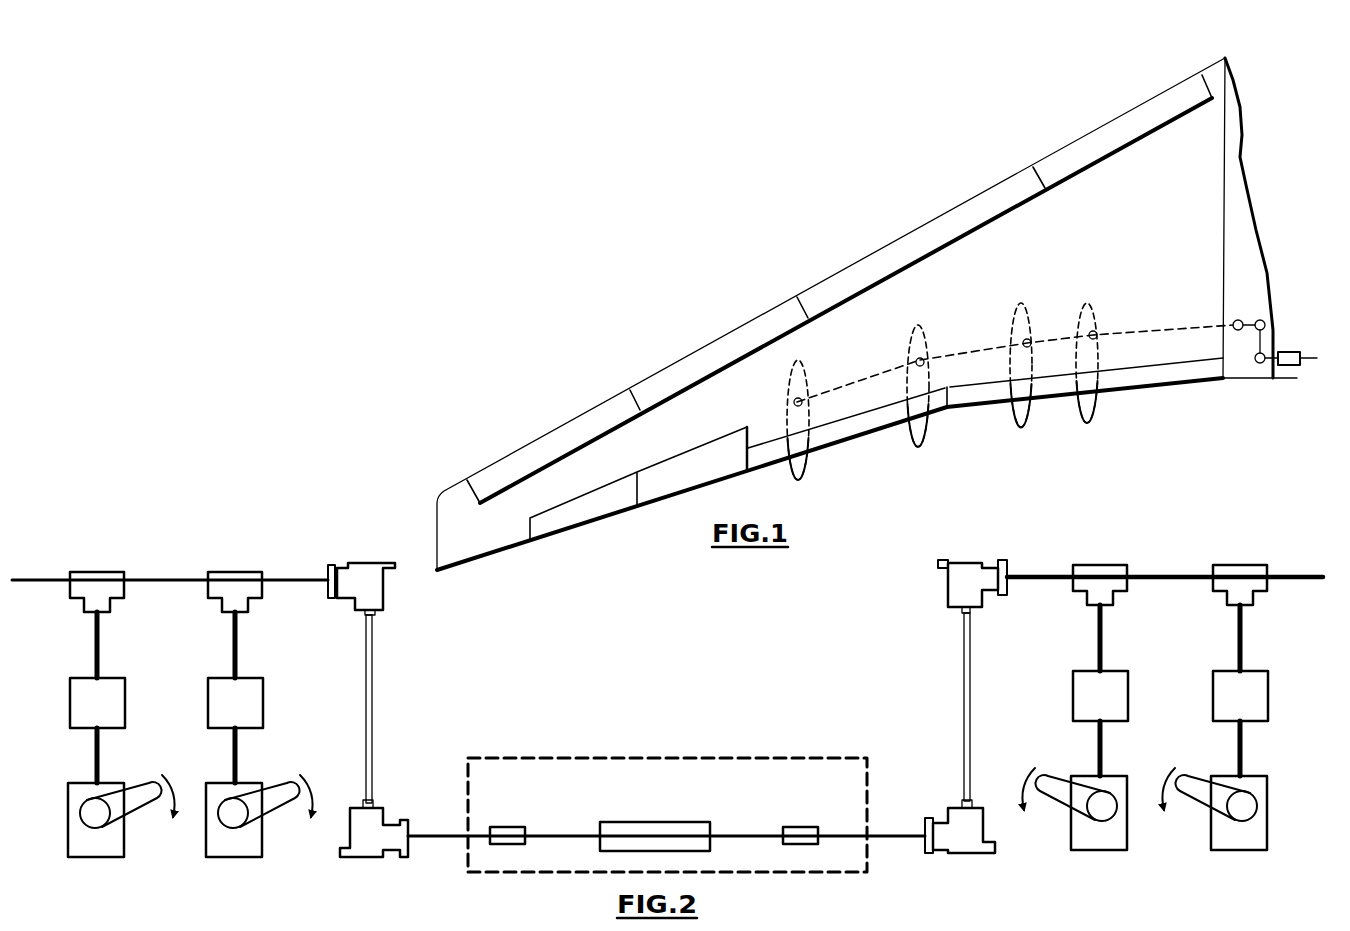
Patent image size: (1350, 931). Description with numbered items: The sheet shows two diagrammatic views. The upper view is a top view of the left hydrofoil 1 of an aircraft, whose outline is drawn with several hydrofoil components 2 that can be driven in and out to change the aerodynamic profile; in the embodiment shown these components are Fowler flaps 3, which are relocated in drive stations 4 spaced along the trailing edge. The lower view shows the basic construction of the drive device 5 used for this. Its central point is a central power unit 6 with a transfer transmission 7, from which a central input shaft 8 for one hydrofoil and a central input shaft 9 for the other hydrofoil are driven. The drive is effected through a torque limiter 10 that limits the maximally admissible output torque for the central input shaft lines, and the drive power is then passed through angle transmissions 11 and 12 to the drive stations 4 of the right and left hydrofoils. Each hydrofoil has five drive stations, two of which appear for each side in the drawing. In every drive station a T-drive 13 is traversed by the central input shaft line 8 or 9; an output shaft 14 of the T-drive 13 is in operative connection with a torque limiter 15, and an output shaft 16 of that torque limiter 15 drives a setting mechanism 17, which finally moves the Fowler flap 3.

In FIG. 1, the hydrofoil 1 is at (1127, 162).
In FIG. 1, the hydrofoil components 2 is at (970, 403).
In FIG. 1, the Fowler flaps 3 is at (868, 423).
In FIG. 1, the drive stations 4 is at (812, 352).
In FIG. 2, the drive stations 4 is at (664, 670).
In FIG. 2, the drive device 5 is at (666, 783).
In FIG. 2, the central power unit 6 is at (802, 758).
In FIG. 2, the transfer transmission 7 is at (638, 830).
In FIG. 1, the central input shaft 8 is at (978, 335).
In FIG. 2, the central input shaft 8 is at (372, 680).
In FIG. 2, the central input shaft 9 is at (965, 632).
In FIG. 1, the torque limiter 10 is at (1293, 348).
In FIG. 2, the torque limiter 10 is at (503, 827).
In FIG. 1, the angle transmission 11 is at (1258, 366).
In FIG. 2, the angle transmission 11 is at (367, 830).
In FIG. 1, the angle transmission 12 is at (1268, 318).
In FIG. 2, the angle transmission 12 is at (377, 570).
In FIG. 1, the T-drive 13 is at (803, 397).
In FIG. 2, the T-drive 13 is at (97, 572).
In FIG. 2, the output shaft 14 is at (102, 637).
In FIG. 2, the torque limiter 15 is at (100, 697).
In FIG. 2, the output shaft 16 is at (102, 753).
In FIG. 2, the setting mechanism 17 is at (78, 790).